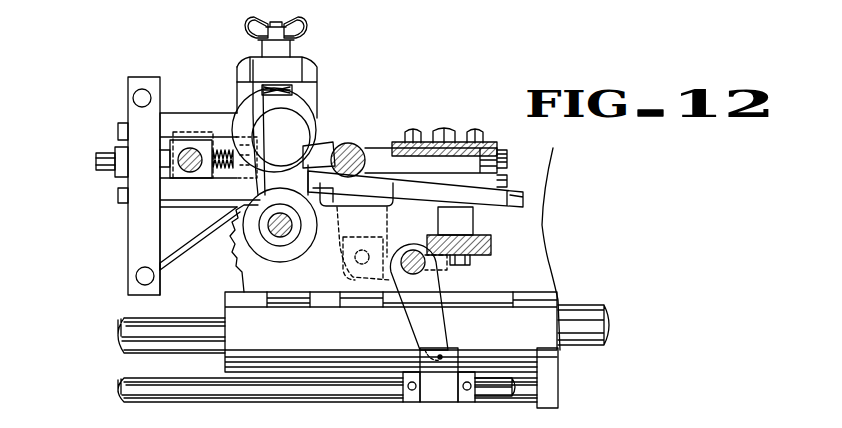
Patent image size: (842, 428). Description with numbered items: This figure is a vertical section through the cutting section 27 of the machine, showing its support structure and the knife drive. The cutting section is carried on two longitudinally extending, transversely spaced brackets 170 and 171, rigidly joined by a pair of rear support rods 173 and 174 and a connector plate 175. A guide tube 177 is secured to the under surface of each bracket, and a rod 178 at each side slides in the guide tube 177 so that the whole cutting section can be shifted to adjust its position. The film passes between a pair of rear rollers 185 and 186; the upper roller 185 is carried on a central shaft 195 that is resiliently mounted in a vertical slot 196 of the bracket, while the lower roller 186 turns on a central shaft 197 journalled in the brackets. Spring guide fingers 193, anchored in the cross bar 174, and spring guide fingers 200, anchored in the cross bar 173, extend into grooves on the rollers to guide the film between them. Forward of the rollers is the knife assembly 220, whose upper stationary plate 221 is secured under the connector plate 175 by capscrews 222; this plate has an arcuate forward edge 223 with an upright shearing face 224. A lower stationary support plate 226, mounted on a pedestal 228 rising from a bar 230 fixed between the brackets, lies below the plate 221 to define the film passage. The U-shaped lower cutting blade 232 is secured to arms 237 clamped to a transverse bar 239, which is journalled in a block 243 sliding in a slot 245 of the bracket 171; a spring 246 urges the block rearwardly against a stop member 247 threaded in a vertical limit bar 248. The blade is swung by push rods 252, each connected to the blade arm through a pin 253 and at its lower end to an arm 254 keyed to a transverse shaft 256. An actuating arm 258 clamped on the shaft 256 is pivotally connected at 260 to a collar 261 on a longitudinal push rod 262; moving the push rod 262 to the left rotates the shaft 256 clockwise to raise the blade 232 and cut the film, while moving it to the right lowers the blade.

The cutting section 27 is at (556, 248).
The bracket 170 is at (553, 264).
The bracket 171 is at (242, 97).
The rear support rod 173 is at (145, 278).
The rear support rod 174 is at (142, 98).
The connector plate 175 is at (497, 145).
The guide tube 177 is at (292, 339).
The rod 178 is at (592, 326).
The rear roller 185 is at (306, 102).
The lower roller 186 is at (271, 266).
The spring guide finger 193 is at (162, 113).
The central shaft 195 is at (325, 120).
The vertical slot 196 is at (305, 90).
The central shaft 197 is at (283, 232).
The spring guide finger 200 is at (195, 242).
The knife assembly 220 is at (519, 182).
The upper stationary plate 221 is at (508, 160).
The capscrew 222 is at (440, 133).
The arcuate forward edge 223 is at (551, 158).
The upright shearing face 224 is at (510, 163).
The lower stationary support plate 226 is at (545, 193).
The pedestal 228 is at (472, 225).
The bar 230 is at (480, 256).
The lower cutting blade 232 is at (523, 203).
The arm 237 is at (270, 188).
The transverse bar 239 is at (192, 172).
The block 243 is at (203, 146).
The slot 245 is at (118, 131).
The spring 246 is at (228, 146).
The stop member 247 is at (108, 168).
The vertical limit bar 248 is at (140, 251).
The push rod 252 is at (376, 213).
The pin 253 is at (350, 140).
The arm 254 is at (388, 241).
The shaft 256 is at (446, 275).
The actuating arm 258 is at (448, 315).
The pivotal connection 260 is at (438, 356).
The collar 261 is at (444, 396).
The push rod 262 is at (320, 392).